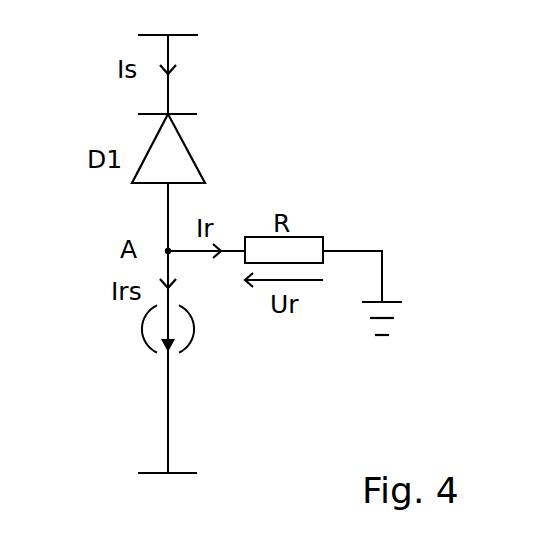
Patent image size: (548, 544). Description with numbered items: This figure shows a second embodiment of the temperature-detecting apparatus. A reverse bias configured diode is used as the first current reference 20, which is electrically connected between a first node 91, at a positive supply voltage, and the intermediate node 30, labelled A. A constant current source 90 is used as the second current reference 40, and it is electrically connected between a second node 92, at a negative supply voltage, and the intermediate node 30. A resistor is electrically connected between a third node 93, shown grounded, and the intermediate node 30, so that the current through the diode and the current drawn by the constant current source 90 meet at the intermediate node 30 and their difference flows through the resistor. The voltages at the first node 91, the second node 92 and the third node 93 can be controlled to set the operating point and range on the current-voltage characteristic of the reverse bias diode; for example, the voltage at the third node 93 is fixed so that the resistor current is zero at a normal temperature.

The first node 91 is at (208, 36).
The first current reference 20 is at (212, 147).
The intermediate node 30 is at (163, 249).
The second current reference 40 is at (135, 352).
The constant current source 90 is at (192, 348).
The second node 92 is at (207, 489).
The third node 93 is at (395, 300).